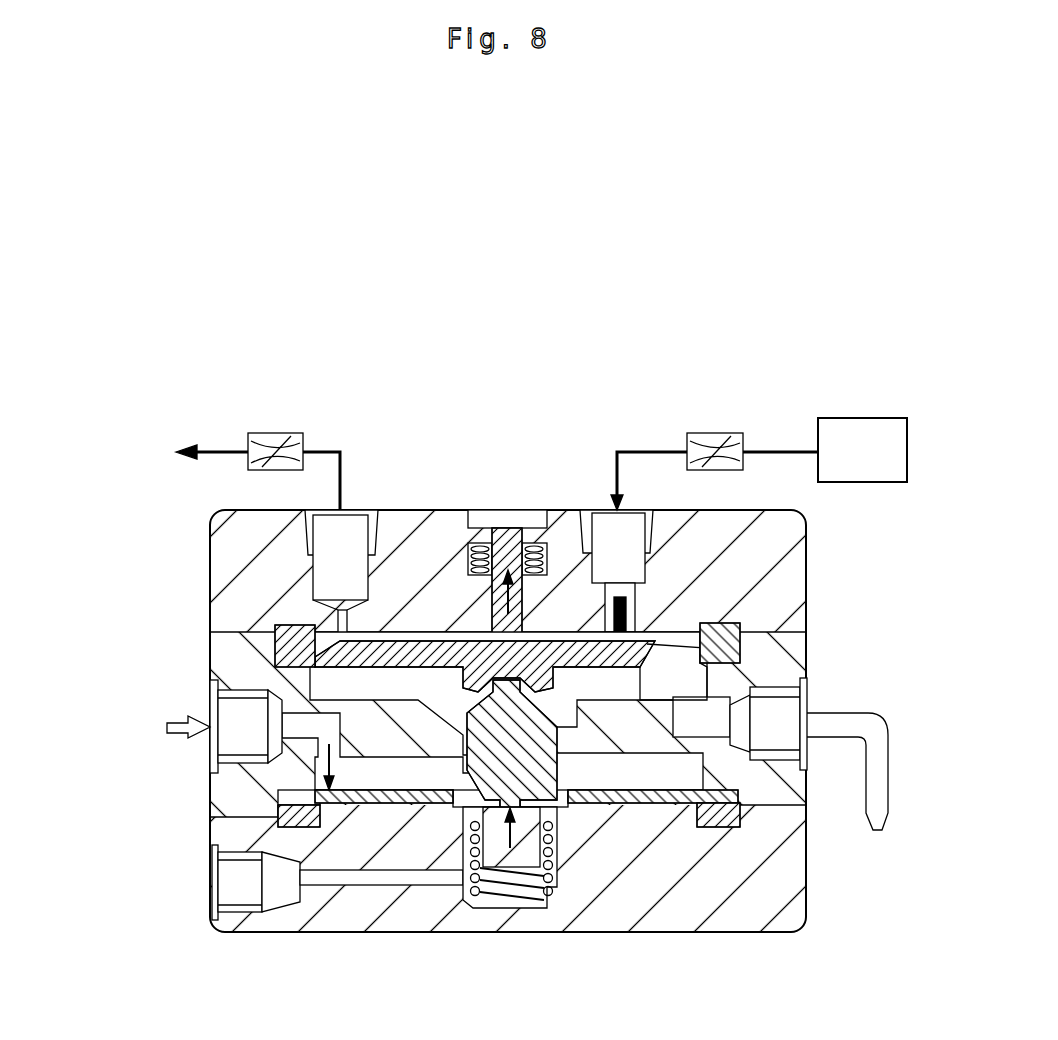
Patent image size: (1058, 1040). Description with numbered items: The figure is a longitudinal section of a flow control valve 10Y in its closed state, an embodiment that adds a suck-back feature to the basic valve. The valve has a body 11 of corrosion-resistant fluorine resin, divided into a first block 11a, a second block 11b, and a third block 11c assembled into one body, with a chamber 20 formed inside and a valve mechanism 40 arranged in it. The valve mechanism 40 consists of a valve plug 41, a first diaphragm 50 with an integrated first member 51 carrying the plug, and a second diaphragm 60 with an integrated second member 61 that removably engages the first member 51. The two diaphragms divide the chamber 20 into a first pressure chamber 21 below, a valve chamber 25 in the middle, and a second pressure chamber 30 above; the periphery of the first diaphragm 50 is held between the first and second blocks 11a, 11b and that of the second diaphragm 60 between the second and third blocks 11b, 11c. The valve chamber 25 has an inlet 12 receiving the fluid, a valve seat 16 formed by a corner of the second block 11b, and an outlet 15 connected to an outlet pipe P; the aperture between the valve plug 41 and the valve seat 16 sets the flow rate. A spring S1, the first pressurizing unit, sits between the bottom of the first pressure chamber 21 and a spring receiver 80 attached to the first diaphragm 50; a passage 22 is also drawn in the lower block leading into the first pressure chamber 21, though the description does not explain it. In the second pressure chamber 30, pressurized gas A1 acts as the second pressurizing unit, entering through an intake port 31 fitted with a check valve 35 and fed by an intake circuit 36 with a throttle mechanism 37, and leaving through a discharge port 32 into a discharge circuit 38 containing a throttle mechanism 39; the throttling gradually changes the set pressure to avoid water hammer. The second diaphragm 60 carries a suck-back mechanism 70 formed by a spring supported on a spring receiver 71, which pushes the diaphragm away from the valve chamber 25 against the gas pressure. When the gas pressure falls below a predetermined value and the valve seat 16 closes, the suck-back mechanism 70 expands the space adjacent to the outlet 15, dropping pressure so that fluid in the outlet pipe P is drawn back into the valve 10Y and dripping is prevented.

The flow control valve 10Y is at (196, 390).
The body 11 is at (806, 553).
The first block 11a is at (232, 922).
The second block 11b is at (793, 645).
The third block 11c is at (232, 556).
The inlet 12 is at (295, 720).
The outlet 15 is at (705, 727).
The valve seat 16 is at (467, 713).
The chamber 20 is at (668, 808).
The first pressure chamber 21 is at (440, 900).
The passage 22 is at (375, 880).
The valve chamber 25 is at (662, 667).
The second pressure chamber 30 is at (437, 613).
The intake port 31 is at (623, 563).
The discharge port 32 is at (353, 588).
The check valve 35 is at (607, 627).
The intake circuit 36 is at (617, 450).
The throttle mechanism 37 is at (722, 440).
The discharge circuit 38 is at (323, 450).
The throttle mechanism 39 is at (262, 437).
The valve mechanism 40 is at (470, 626).
The valve plug 41 is at (480, 780).
The first diaphragm 50 is at (547, 800).
The first member 51 is at (540, 727).
The second diaphragm 60 is at (372, 650).
The second member 61 is at (547, 690).
The suck-back mechanism 70 is at (525, 545).
The spring receiver 71 is at (482, 540).
The spring receiver 80 is at (487, 823).
The pressurized gas A1 is at (835, 440).
The outlet pipe P is at (880, 780).
The spring S1 is at (545, 908).